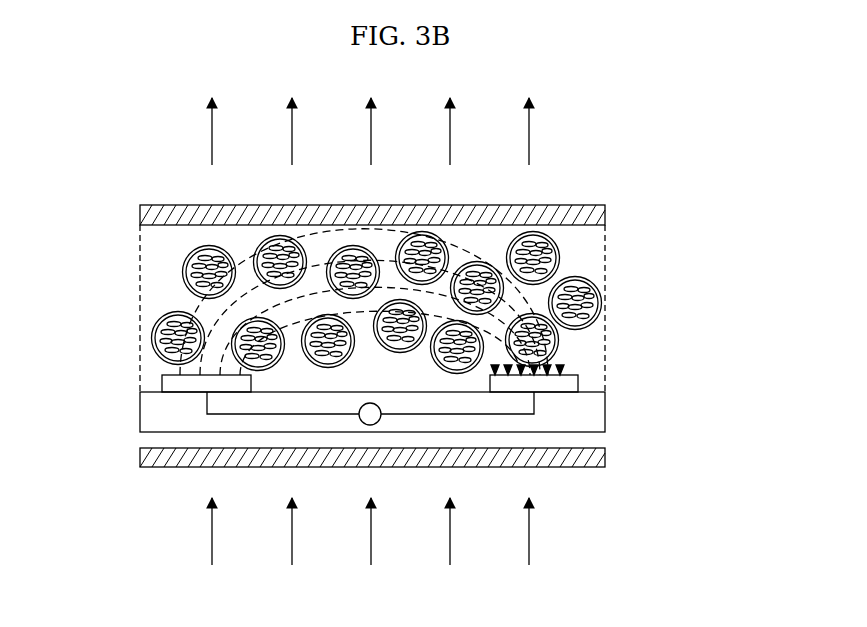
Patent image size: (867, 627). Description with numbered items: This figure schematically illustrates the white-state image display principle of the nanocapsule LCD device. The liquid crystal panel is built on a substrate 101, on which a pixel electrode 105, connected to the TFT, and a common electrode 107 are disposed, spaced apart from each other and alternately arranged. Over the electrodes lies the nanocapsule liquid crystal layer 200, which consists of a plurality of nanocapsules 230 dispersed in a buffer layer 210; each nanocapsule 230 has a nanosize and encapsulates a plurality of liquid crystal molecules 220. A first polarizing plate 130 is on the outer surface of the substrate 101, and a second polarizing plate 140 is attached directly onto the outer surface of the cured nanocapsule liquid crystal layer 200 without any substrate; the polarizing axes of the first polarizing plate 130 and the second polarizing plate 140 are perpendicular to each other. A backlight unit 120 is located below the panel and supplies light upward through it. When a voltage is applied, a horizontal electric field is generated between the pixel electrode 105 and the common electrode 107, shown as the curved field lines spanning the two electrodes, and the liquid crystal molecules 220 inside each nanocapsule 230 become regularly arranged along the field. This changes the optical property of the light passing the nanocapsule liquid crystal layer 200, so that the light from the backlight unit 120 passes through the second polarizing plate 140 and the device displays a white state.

The substrate 101 is at (605, 410).
The pixel electrode 105 is at (167, 382).
The common electrode 107 is at (580, 372).
The backlight unit 120 is at (370, 547).
The first polarizing plate 130 is at (605, 457).
The second polarizing plate 140 is at (605, 205).
The nanocapsule liquid crystal layer 200 is at (452, 303).
The buffer layer 210 is at (600, 330).
The liquid crystal molecules 220 is at (600, 300).
The nanocapsules 230 is at (600, 270).